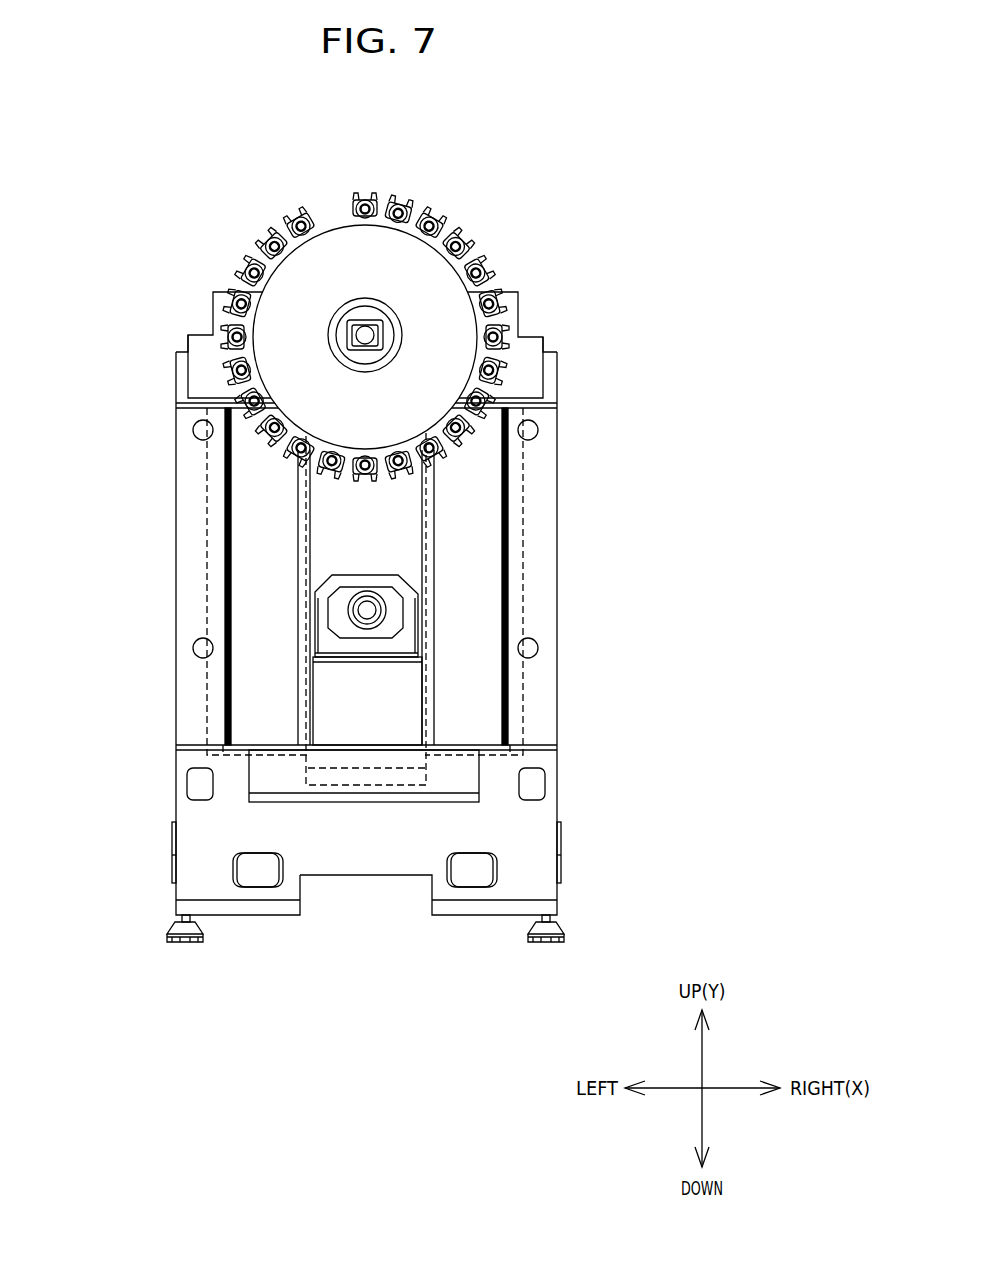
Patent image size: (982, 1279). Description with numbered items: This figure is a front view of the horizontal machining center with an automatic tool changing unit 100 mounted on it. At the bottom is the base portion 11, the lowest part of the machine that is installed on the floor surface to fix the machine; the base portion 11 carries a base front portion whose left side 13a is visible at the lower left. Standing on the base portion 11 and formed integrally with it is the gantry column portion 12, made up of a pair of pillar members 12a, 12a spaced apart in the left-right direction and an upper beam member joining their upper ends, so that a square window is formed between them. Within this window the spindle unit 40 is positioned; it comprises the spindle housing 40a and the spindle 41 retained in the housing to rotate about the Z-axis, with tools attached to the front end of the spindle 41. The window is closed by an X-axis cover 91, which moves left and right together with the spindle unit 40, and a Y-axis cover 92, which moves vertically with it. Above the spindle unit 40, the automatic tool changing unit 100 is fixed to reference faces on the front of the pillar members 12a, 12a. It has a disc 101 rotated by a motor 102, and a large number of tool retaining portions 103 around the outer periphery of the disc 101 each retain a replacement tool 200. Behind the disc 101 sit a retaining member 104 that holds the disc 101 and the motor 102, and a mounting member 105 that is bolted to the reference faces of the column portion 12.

The base portion 11 is at (573, 794).
The gantry column portion 12 is at (170, 426).
The pillar member 12a is at (187, 672).
The base side portion 13a is at (210, 837).
The spindle unit 40 is at (359, 559).
The spindle housing 40a is at (335, 662).
The spindle 41 is at (382, 608).
The X-axis cover 91 is at (257, 575).
The Y-axis cover 92 is at (327, 515).
The automatic tool changing unit 100 is at (472, 197).
The disc 101 is at (418, 288).
The motor 102 is at (350, 327).
The tool retaining portion 103 is at (380, 197).
The retaining member 104 is at (527, 355).
The mounting member 105 is at (550, 378).
The replacement tool 200 is at (297, 218).